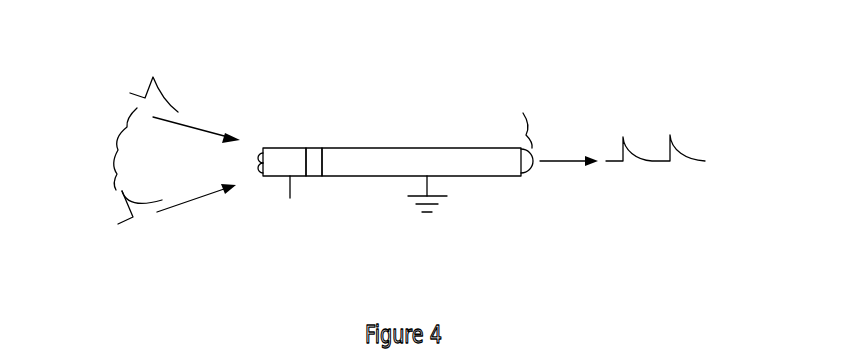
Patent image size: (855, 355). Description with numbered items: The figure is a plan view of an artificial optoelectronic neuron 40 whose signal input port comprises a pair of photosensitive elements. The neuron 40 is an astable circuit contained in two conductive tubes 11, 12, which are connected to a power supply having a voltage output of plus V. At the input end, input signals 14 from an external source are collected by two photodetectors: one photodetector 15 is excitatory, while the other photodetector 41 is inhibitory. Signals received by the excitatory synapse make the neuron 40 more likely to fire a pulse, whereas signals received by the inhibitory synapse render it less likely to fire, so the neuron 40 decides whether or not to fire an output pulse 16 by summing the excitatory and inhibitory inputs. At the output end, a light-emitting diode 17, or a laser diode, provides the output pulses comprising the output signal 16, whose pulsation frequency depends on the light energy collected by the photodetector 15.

The input signals 14 is at (169, 150).
The photodetector 15 is at (259, 150).
The photodetector 41 is at (258, 173).
The conductive tube 11 is at (290, 148).
The optoelectronic neuron 40 is at (378, 122).
The conductive tube 12 is at (398, 148).
The light-emitting diode 17 is at (530, 126).
The output signal 16 is at (686, 144).